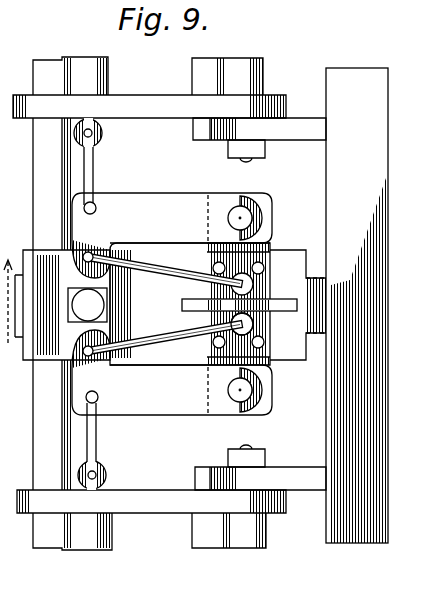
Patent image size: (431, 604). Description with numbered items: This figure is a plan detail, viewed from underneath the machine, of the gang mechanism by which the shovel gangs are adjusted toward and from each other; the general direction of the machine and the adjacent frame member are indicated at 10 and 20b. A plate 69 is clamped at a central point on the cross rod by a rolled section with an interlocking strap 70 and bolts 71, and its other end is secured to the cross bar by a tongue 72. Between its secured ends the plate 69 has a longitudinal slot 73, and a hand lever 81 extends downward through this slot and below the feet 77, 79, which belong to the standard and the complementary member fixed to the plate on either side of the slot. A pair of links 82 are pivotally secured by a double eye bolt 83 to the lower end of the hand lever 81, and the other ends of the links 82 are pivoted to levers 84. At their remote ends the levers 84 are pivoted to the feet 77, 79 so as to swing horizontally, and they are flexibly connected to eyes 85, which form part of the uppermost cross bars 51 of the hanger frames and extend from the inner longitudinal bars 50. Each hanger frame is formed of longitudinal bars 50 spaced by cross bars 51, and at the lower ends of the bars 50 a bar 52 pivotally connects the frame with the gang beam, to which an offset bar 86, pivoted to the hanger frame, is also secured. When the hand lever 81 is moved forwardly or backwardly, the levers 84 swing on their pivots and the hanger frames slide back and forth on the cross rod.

The direction arrow 10 is at (11, 317).
The column 20b is at (366, 540).
The longitudinal bars 50 is at (188, 112).
The cross bars 51 is at (108, 77).
The bar 52 is at (259, 83).
The plate 69 is at (190, 304).
The interlocking strap 70 is at (58, 362).
The bolts 71 is at (82, 300).
The tongue 72 is at (321, 333).
The longitudinal slot 73 is at (198, 313).
The foot 77 is at (268, 402).
The foot 79 is at (264, 208).
The hand lever 81 is at (268, 297).
The links 82 is at (173, 306).
The double eye bolt 83 is at (254, 323).
The levers 84 is at (172, 304).
The eyes 85 is at (103, 140).
The offset bar 86 is at (300, 138).